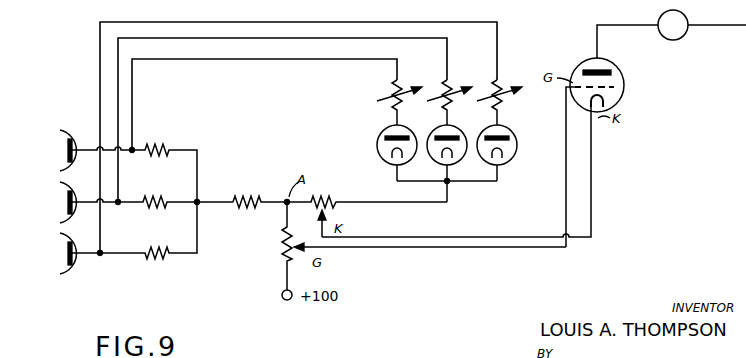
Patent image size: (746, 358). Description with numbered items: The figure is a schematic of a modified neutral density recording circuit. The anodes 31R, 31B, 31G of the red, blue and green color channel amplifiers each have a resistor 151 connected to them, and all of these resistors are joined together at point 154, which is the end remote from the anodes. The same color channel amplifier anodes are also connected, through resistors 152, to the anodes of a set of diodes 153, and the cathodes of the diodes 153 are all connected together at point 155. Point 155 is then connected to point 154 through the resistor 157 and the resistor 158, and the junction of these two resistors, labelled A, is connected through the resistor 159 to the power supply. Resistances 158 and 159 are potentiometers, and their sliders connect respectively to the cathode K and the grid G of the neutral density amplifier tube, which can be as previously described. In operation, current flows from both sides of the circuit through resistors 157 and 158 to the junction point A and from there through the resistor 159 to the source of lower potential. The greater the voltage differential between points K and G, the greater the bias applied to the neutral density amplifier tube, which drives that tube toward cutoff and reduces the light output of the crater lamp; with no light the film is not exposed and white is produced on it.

The anode of the red color channel amplifier 31R is at (78, 150).
The anode of the blue color channel amplifier 31B is at (71, 202).
The anode of the green color channel amplifier 31G is at (62, 253).
The resistor 151 is at (164, 160).
The resistor 152 is at (390, 90).
The diode 153 is at (390, 150).
The junction point 154 is at (211, 197).
The common cathode connection 155 is at (452, 188).
The resistor 157 is at (251, 197).
The potentiometer 158 is at (328, 197).
The potentiometer 159 is at (278, 246).